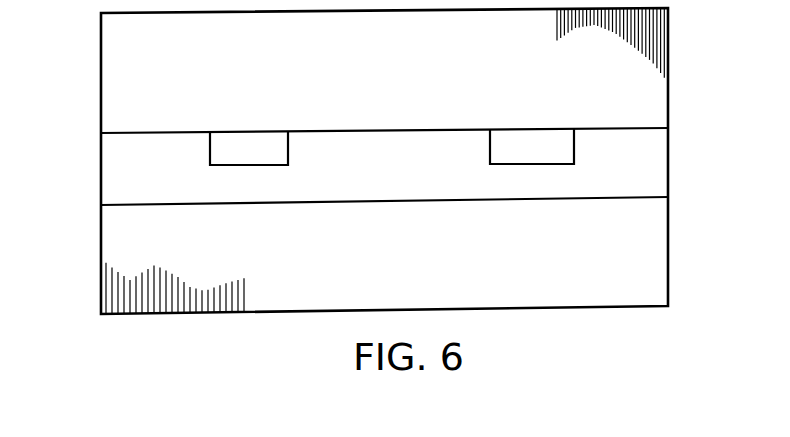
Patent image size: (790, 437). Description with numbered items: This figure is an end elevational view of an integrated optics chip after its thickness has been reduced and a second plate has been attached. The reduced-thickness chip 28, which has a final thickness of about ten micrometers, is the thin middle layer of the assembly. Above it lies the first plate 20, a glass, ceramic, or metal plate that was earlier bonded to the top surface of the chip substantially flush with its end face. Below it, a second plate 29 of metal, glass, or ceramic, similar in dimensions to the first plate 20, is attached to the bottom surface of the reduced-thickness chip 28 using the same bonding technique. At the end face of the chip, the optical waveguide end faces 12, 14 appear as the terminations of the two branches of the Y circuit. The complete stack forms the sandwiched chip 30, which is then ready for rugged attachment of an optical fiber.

The optical waveguide end face 12 is at (249, 143).
The optical waveguide end face 14 is at (530, 142).
The first plate 20 is at (127, 63).
The reduced-thickness chip 28 is at (120, 172).
The second plate 29 is at (130, 245).
The sandwiched chip 30 is at (686, 152).